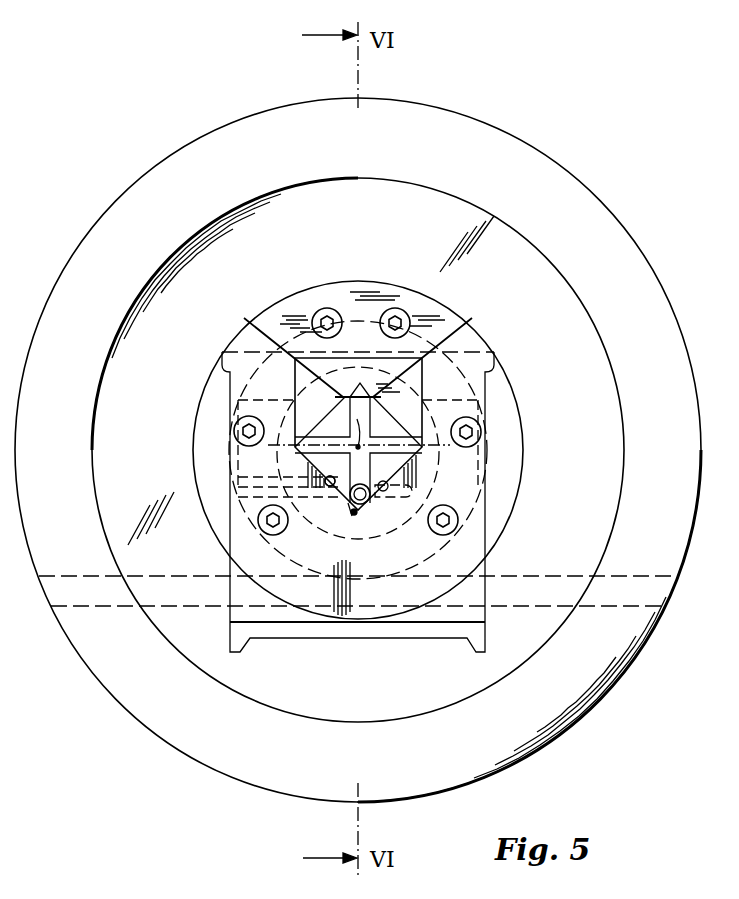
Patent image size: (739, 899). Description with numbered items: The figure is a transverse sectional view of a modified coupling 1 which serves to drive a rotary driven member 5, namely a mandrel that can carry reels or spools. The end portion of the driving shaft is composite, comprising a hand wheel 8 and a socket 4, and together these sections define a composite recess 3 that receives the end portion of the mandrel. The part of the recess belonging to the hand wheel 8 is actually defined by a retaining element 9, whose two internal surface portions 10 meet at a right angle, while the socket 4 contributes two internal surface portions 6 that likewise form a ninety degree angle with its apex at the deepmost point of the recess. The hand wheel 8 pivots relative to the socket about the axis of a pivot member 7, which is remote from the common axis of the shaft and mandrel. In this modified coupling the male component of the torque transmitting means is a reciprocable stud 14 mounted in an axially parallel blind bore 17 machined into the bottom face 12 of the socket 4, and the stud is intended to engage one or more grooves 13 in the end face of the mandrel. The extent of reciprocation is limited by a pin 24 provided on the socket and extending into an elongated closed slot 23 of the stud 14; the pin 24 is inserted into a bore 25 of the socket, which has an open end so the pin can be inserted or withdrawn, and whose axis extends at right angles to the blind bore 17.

The coupling 1 is at (514, 124).
The hand wheel 8 is at (558, 193).
The pivot member 7 is at (195, 590).
The socket 4 is at (405, 410).
The pin 24 is at (248, 507).
The bore 25 is at (300, 537).
The bottom face 12 is at (297, 445).
The internal surface portions 10 is at (355, 388).
The retaining element 9 is at (456, 330).
The rotary driven member 5 is at (298, 392).
The composite recess 3 is at (385, 465).
The blind bore 17 is at (305, 437).
The grooves 13 is at (325, 481).
The internal surface portions 6 is at (330, 487).
The elongated closed slot 23 is at (363, 505).
The stud 14 is at (353, 516).